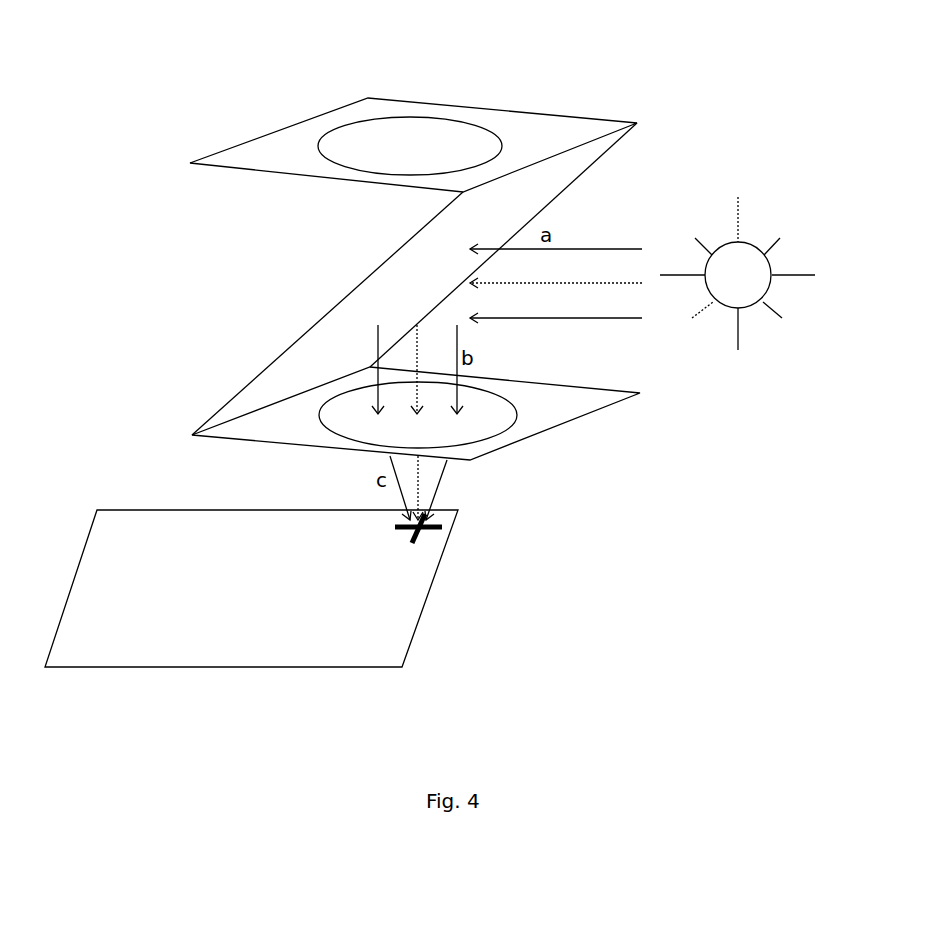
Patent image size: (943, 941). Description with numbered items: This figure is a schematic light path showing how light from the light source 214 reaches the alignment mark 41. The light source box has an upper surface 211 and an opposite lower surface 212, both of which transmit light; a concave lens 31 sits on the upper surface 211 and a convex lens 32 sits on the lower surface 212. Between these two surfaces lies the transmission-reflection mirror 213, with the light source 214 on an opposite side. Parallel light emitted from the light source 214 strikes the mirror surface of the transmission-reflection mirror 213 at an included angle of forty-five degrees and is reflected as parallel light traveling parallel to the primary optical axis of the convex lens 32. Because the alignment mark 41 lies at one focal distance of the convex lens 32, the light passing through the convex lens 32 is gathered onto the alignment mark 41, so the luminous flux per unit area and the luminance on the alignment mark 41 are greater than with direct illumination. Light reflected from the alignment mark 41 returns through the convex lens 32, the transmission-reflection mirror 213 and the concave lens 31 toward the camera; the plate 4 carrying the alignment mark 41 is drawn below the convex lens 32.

The upper surface 211 is at (268, 150).
The lower surface 212 is at (567, 397).
The transmission-reflection mirror 213 is at (278, 382).
The light source 214 is at (742, 260).
The concave lens 31 is at (424, 138).
The convex lens 32 is at (480, 413).
The detection substrate 4 is at (252, 637).
The alignment mark 41 is at (442, 532).